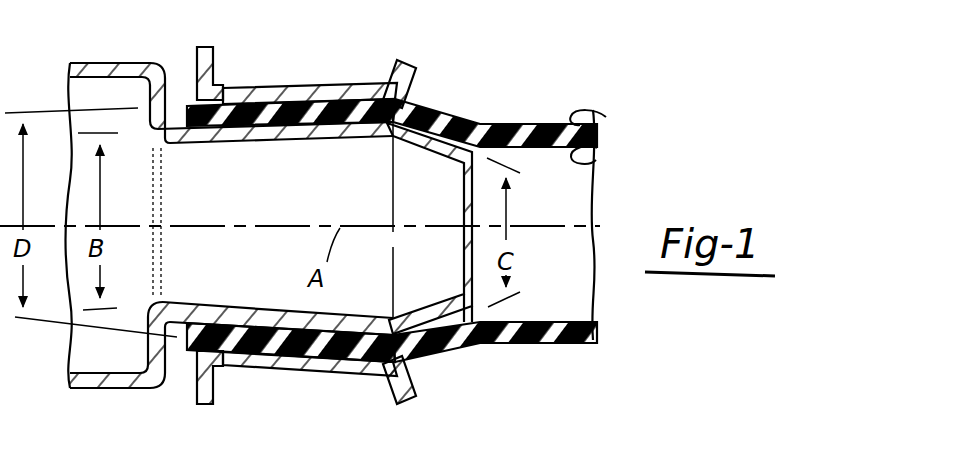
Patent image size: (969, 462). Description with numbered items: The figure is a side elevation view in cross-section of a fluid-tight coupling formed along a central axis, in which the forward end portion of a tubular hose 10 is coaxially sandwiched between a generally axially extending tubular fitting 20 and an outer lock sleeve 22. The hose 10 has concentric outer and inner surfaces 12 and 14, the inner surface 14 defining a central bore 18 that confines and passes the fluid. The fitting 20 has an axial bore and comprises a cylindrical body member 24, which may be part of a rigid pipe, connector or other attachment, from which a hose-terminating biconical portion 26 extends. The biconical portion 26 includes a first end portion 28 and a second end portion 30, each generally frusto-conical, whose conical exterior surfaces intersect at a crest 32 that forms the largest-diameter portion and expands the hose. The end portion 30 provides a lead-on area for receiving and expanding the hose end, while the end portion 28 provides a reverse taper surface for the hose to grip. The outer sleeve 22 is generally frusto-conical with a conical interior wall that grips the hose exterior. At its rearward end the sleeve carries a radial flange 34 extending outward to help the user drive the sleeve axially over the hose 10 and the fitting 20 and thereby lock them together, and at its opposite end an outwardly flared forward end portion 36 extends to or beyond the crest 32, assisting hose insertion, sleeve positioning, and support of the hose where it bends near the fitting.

The hose 10 is at (523, 117).
The outer surface 12 is at (605, 119).
The inner surface 14 is at (600, 158).
The central bore 18 is at (568, 193).
The tubular fitting 20 is at (87, 58).
The outer lock sleeve 22 is at (280, 82).
The cylindrical body member 24 is at (125, 72).
The biconical portion 26 is at (206, 146).
The first end portion 28 is at (268, 132).
The second end portion 30 is at (445, 152).
The crest 32 is at (387, 138).
The radial flange 34 is at (214, 68).
The forward end portion 36 is at (417, 83).